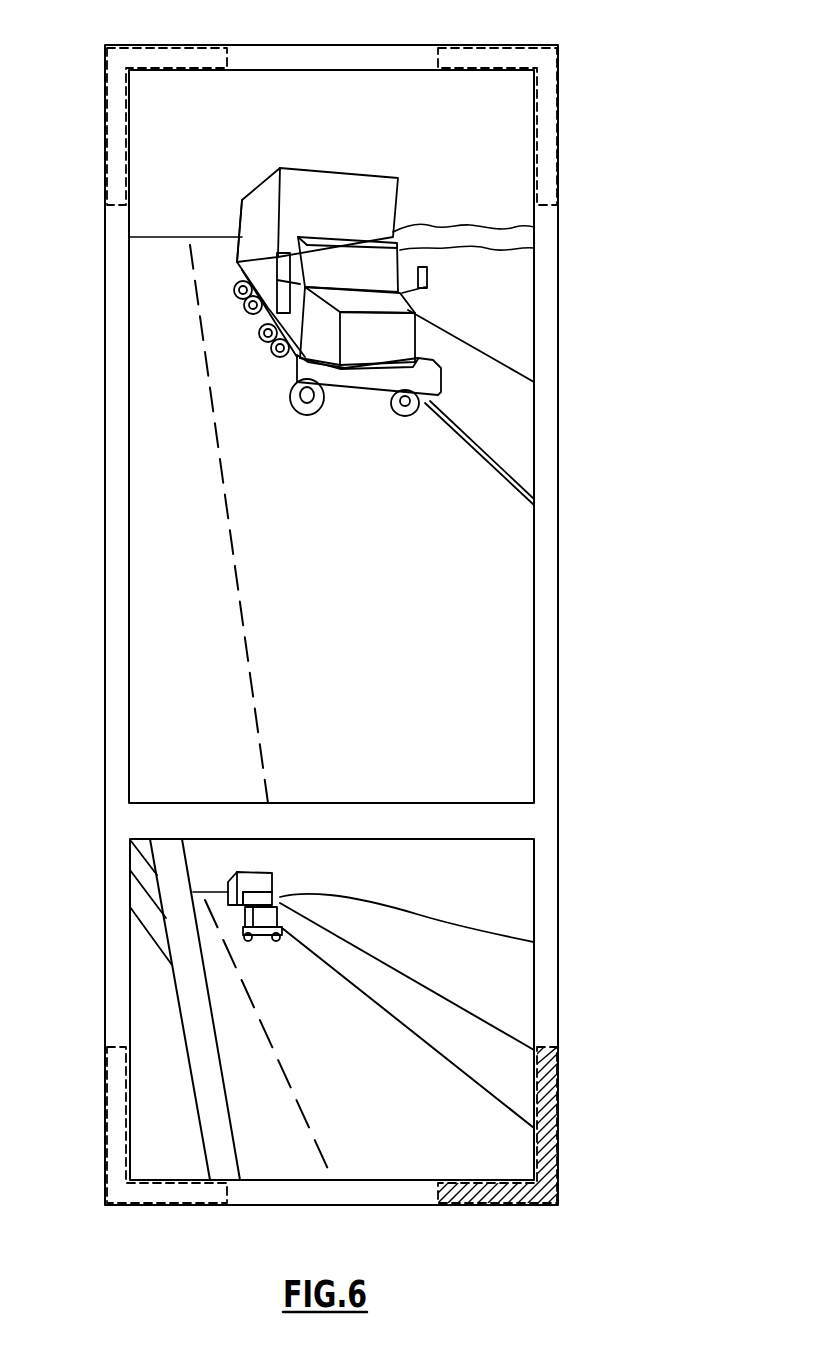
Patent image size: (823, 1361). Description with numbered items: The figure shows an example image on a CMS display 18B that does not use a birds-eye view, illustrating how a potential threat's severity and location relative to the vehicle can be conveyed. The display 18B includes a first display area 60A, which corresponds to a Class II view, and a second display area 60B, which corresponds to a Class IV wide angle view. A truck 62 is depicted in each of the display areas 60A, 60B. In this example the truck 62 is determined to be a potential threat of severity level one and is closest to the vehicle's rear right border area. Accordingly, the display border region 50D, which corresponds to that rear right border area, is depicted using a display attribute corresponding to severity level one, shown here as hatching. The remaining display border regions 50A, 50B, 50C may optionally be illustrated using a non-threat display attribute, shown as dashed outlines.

The CMS display 18B is at (632, 66).
The display border region 50A is at (127, 58).
The display border region 50B is at (537, 58).
The display border region 50C is at (112, 1180).
The display border region 50D is at (537, 1193).
The first display area 60A is at (508, 615).
The second display area 60B is at (512, 900).
The truck 62 is at (333, 156).